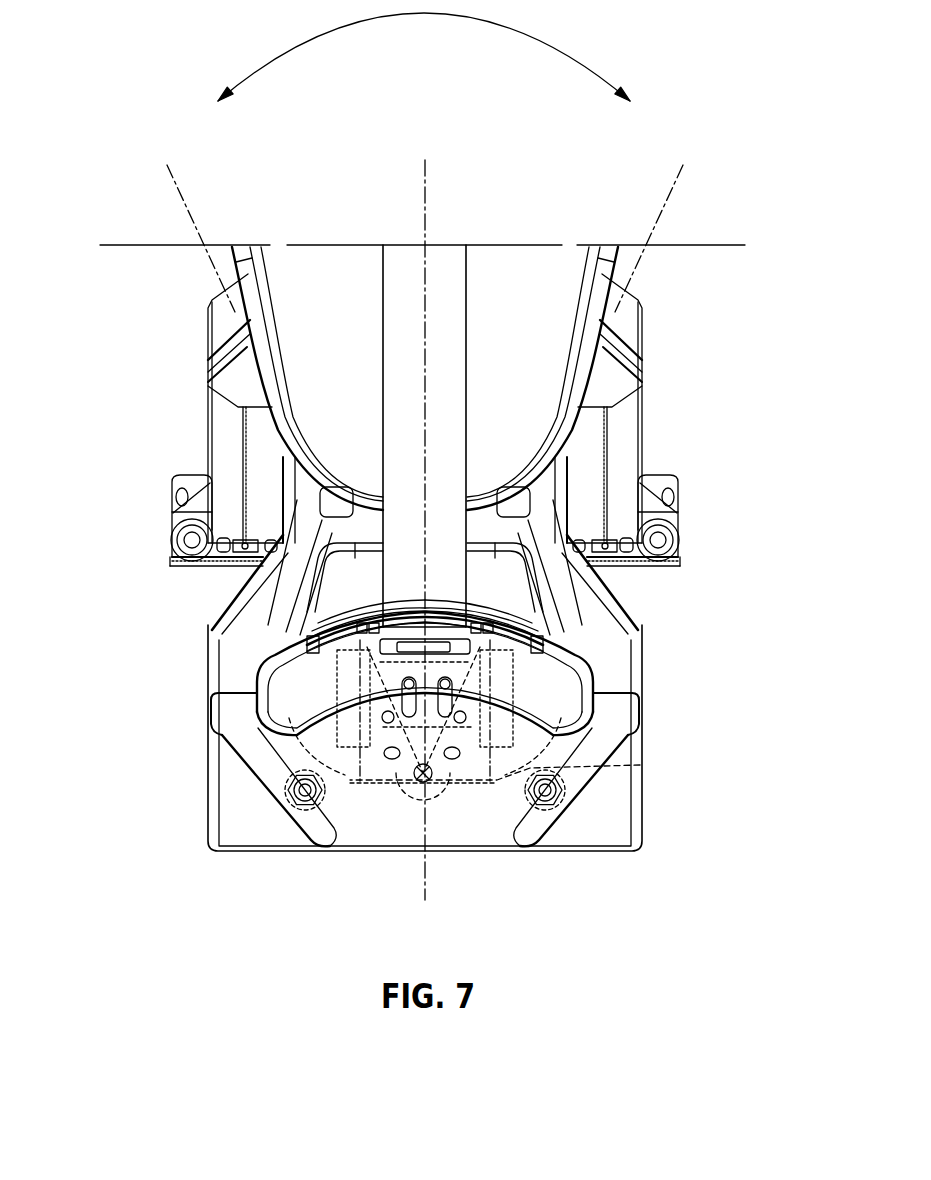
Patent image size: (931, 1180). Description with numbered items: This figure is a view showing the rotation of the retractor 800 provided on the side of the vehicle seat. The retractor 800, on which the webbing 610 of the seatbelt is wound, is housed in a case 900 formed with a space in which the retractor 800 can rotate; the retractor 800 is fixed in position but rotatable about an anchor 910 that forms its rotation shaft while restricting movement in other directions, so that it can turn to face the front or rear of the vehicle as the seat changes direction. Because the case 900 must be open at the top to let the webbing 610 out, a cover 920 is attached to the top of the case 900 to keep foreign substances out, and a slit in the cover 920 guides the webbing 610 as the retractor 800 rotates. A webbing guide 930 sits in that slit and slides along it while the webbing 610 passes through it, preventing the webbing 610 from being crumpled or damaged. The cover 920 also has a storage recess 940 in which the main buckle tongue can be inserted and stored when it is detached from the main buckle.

The webbing 610 is at (452, 262).
The retractor 800 is at (600, 766).
The case 900 is at (276, 762).
The anchor 910 is at (433, 795).
The cover 920 is at (258, 697).
The webbing guide 930 is at (318, 640).
The storage recess 940 is at (545, 640).